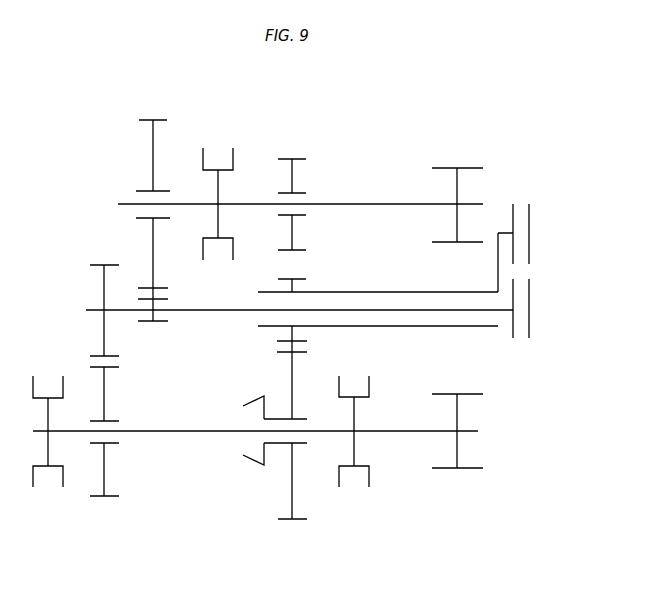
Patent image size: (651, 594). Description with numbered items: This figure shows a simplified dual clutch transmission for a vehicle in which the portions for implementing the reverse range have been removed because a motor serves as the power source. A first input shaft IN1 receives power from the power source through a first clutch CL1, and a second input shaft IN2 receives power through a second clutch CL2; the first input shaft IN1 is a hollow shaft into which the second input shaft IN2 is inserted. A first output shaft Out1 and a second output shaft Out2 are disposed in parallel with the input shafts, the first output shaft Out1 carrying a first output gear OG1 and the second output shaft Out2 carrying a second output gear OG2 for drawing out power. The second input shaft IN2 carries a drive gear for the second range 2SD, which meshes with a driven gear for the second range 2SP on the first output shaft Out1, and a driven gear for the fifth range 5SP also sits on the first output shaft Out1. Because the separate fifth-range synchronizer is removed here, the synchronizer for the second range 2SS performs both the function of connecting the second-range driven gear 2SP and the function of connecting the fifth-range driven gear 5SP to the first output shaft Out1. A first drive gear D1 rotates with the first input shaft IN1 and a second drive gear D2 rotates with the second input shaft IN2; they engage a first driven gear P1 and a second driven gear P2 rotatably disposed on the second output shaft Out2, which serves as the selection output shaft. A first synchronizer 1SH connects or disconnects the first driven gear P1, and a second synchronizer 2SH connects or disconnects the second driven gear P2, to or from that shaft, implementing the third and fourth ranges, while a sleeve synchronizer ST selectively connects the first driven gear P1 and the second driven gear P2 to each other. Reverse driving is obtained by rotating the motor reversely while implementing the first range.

The driven gear for a second range 2SP is at (148, 120).
The synchronizer for the second range 2SS is at (218, 148).
The driven gear for a fifth range 5SP is at (289, 159).
The first output gear OG1 is at (473, 168).
The first output shaft Out1 is at (468, 204).
The first clutch CL1 is at (529, 234).
The second clutch CL2 is at (529, 310).
The second drive gear D2 is at (99, 264).
The first drive gear D1 is at (303, 279).
The drive gear for a second range 2SD is at (147, 299).
The first input shaft IN1 is at (478, 326).
The second input shaft IN2 is at (440, 310).
The second synchronizer 2SH is at (48, 489).
The second driven gear P2 is at (108, 497).
The sleeve synchronizer ST is at (253, 467).
The first driven gear P1 is at (288, 520).
The first synchronizer 1SH is at (353, 490).
The second output gear OG2 is at (448, 468).
The second output shaft Out2 is at (468, 431).